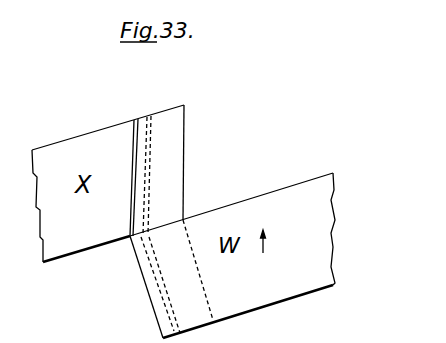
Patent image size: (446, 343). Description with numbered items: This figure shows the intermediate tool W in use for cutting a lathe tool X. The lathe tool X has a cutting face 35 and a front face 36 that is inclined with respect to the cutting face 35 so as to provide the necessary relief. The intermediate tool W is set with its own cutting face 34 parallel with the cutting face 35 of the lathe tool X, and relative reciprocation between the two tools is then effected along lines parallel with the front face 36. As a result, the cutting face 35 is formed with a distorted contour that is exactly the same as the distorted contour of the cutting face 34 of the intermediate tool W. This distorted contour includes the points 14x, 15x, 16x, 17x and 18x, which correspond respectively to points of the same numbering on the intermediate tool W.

The cutting face 35 is at (118, 125).
The cutting face 34 is at (193, 215).
The front face 36 is at (184, 141).
The point 18x is at (137, 118).
The point 17x is at (145, 118).
The point 14x is at (152, 115).
The point 15x is at (150, 113).
The point 16x is at (184, 105).